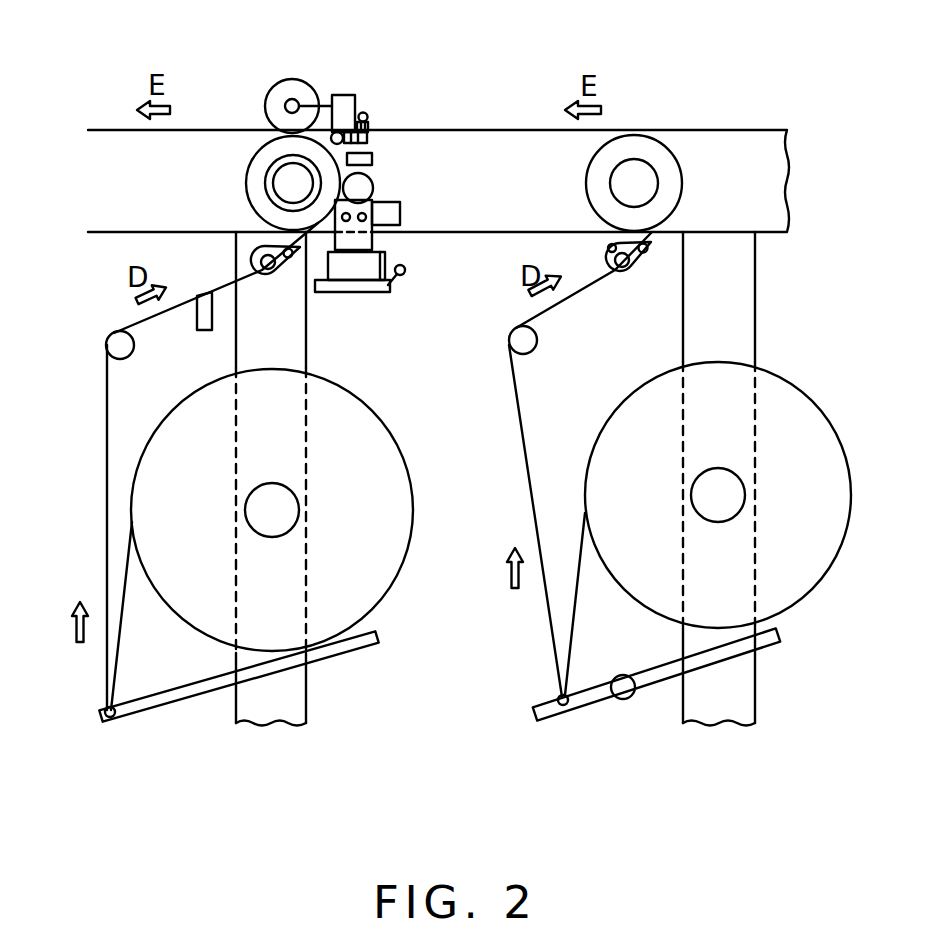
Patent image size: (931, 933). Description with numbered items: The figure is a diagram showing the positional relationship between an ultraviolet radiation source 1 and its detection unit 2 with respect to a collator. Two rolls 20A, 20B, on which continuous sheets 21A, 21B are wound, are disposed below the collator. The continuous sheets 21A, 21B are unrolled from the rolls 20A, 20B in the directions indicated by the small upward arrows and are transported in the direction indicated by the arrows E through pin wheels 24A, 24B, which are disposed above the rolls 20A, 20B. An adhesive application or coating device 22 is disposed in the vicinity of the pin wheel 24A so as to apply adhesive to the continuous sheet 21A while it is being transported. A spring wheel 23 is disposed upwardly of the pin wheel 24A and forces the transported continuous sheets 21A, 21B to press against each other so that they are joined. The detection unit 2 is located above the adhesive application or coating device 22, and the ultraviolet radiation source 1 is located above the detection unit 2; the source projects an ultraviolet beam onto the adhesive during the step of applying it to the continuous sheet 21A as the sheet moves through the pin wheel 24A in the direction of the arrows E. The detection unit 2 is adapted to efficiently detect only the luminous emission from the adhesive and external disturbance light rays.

The ultraviolet radiation source 1 is at (348, 130).
The detection unit 2 is at (372, 159).
The adhesive application or coating device 22 is at (400, 208).
The spring wheel 23 is at (291, 79).
The pin wheel 24A is at (246, 181).
The pin wheel 24B is at (586, 179).
The roll 20A is at (402, 568).
The roll 20B is at (812, 589).
The continuous sheet 21A is at (105, 418).
The continuous sheet 21B is at (518, 410).